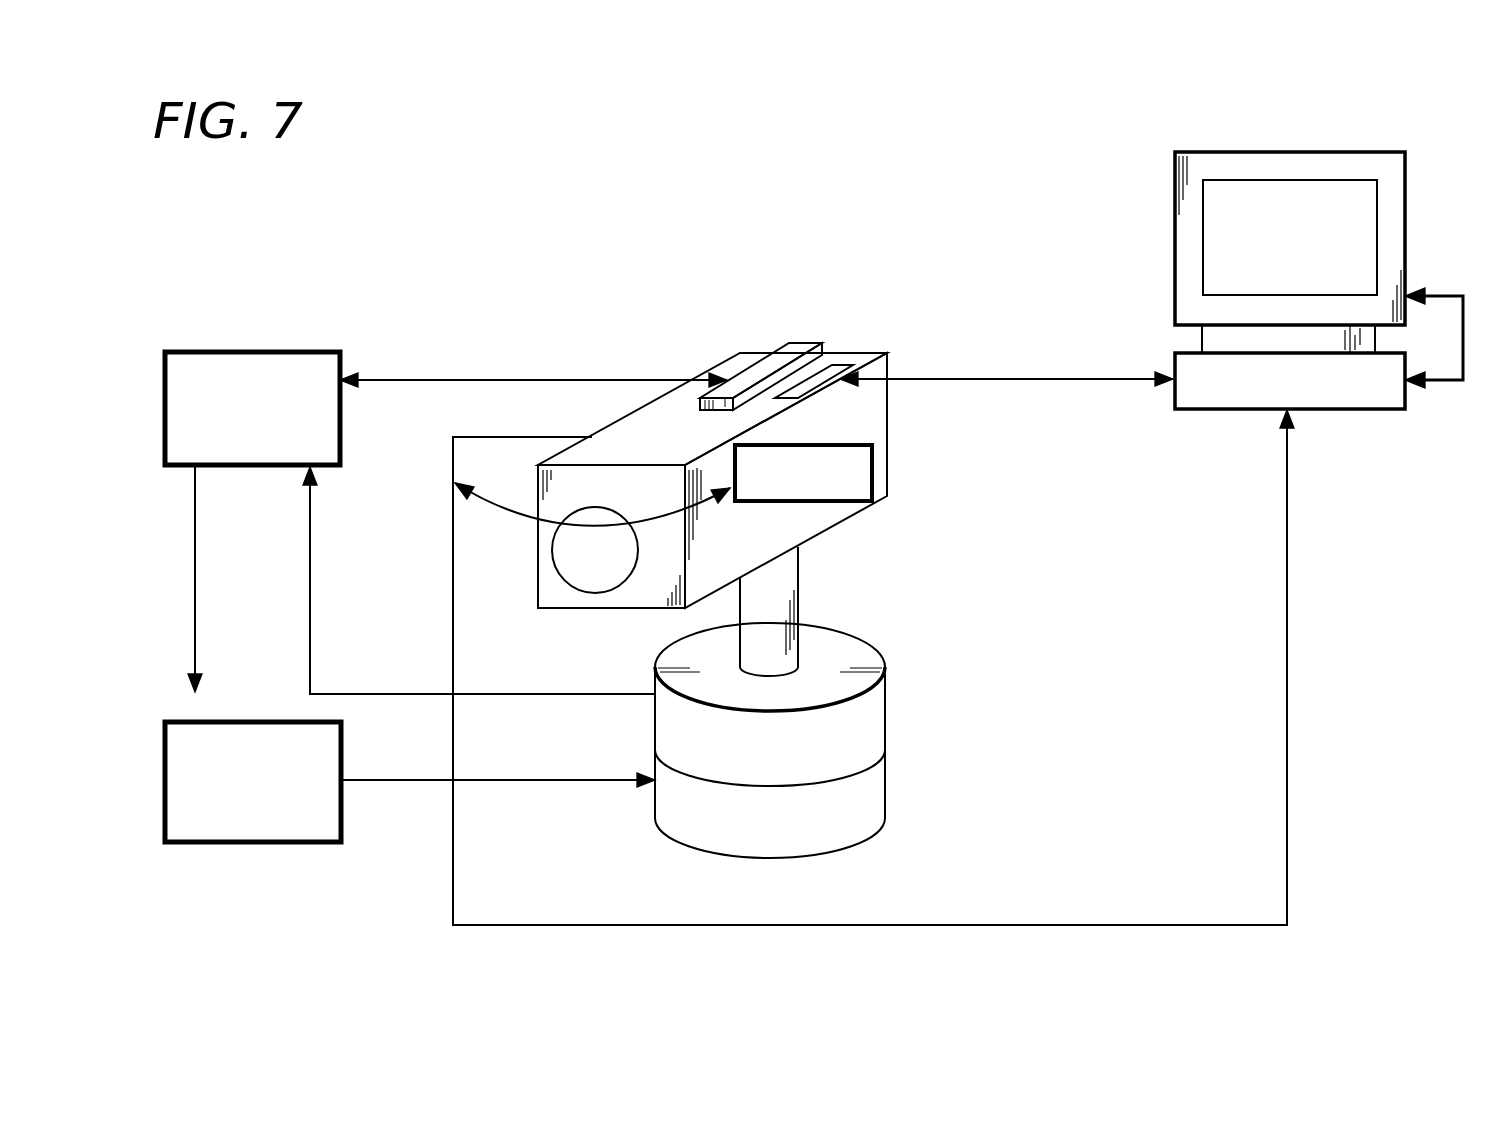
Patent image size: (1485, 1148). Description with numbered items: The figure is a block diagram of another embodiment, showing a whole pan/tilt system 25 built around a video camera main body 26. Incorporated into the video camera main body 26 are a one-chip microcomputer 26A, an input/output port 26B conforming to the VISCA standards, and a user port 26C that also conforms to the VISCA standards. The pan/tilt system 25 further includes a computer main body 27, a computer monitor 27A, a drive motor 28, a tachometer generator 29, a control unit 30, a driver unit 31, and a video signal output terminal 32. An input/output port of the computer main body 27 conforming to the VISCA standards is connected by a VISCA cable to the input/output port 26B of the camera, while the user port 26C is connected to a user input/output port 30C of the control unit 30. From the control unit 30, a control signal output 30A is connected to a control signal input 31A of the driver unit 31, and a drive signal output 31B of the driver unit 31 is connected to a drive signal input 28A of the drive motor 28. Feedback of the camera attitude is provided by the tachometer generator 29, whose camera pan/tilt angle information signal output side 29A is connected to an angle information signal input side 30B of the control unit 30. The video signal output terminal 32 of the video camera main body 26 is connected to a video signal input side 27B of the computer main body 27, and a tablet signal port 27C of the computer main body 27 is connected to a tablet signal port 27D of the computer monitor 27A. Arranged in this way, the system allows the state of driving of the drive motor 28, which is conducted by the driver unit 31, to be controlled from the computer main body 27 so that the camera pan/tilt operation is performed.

The pan/tilt system 25 is at (868, 176).
The video camera main body 26 is at (887, 440).
The one-chip microcomputer 26A is at (828, 503).
The input/output port 26B is at (842, 372).
The user port 26C is at (814, 345).
The computer main body 27 is at (1218, 412).
The computer monitor 27A is at (1407, 181).
The video signal input side 27B is at (1297, 412).
The tablet signal port 27C is at (1408, 388).
The tablet signal port 27D is at (1407, 293).
The drive motor 28 is at (886, 783).
The drive signal input 28A is at (650, 787).
The tachometer generator 29 is at (886, 708).
The camera pan/tilt angle information signal output side 29A is at (654, 690).
The control unit 30 is at (255, 350).
The control signal output 30A is at (197, 470).
The angle information signal input side 30B is at (313, 472).
The user input/output port 30C is at (344, 376).
The driver unit 31 is at (250, 845).
The control signal input 31A is at (202, 722).
The drive signal output 31B is at (344, 776).
The video signal output terminal 32 is at (592, 435).